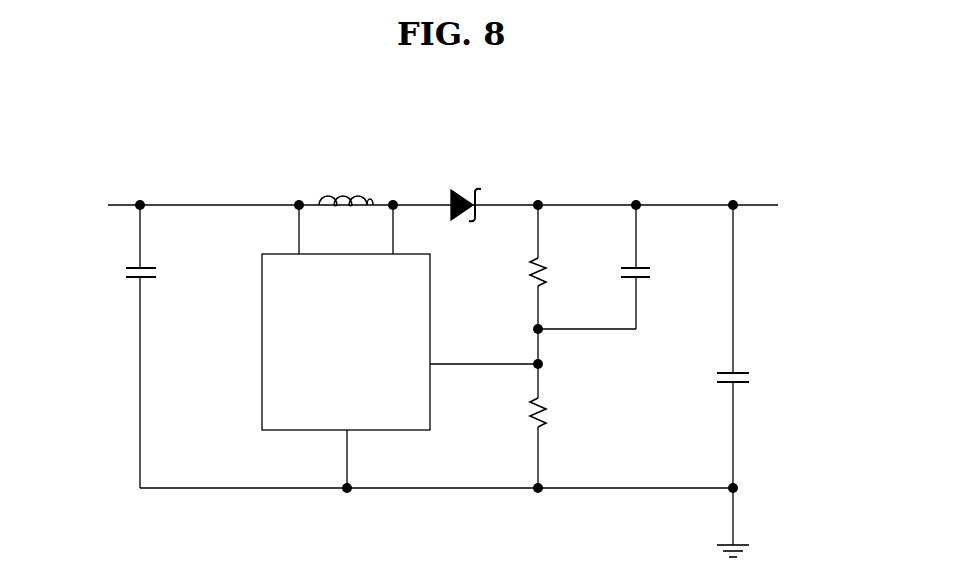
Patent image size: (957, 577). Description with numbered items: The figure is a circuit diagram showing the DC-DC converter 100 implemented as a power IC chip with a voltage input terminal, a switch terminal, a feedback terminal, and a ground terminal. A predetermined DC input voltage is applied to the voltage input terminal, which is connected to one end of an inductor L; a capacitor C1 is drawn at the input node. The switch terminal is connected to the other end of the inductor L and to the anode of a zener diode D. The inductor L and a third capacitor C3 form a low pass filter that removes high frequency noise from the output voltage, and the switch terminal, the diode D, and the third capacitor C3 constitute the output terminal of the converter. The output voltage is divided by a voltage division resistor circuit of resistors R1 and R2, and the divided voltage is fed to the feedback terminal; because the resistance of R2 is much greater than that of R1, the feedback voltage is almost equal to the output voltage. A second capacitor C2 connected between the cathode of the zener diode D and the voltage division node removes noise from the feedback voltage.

The DC-DC converter 100 is at (190, 121).
The input capacitor C1 is at (129, 346).
The inductor L is at (346, 186).
The zener diode D is at (466, 194).
The resistor R1 is at (557, 284).
The resistor R2 is at (557, 426).
The second capacitor C2 is at (608, 267).
The third capacitor C3 is at (746, 346).